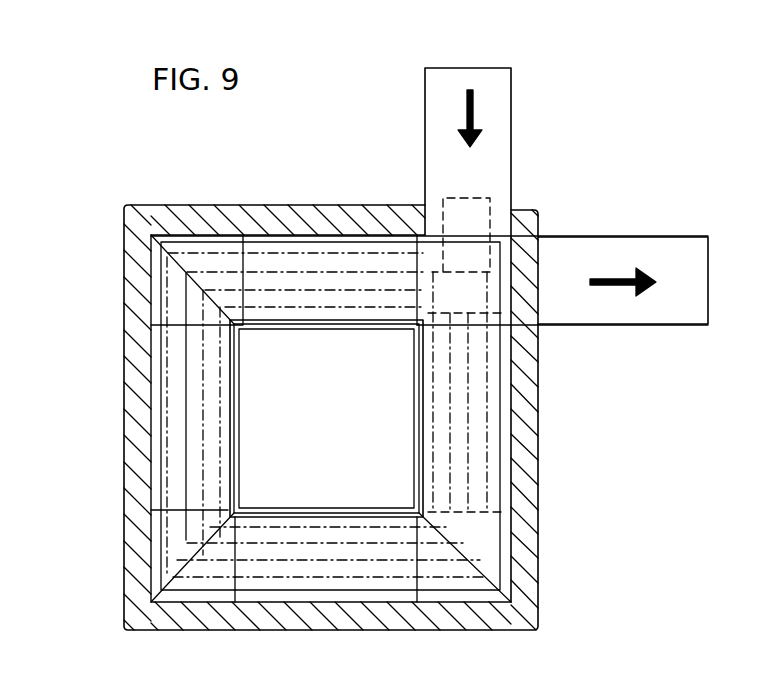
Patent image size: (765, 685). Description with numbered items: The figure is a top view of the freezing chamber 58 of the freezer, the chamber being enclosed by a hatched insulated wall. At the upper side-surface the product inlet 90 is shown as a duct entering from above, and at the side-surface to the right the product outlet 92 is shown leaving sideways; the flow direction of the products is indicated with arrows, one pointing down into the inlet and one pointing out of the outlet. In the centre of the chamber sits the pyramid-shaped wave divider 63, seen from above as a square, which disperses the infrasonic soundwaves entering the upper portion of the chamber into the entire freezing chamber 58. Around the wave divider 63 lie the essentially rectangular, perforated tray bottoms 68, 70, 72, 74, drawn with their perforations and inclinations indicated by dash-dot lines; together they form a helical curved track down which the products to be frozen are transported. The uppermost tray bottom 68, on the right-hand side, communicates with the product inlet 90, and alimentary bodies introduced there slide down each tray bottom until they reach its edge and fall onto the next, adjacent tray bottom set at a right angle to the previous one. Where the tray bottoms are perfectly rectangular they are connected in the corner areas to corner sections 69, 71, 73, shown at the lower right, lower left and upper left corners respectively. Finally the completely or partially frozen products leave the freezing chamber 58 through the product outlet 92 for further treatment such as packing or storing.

The freezing chamber 58 is at (211, 556).
The wave divider 63 is at (340, 441).
The tray bottom 68 is at (477, 472).
The corner section 69 is at (480, 550).
The tray bottom 70 is at (327, 570).
The corner section 71 is at (172, 539).
The tray bottom 72 is at (183, 445).
The corner section 73 is at (172, 279).
The tray bottom 74 is at (285, 265).
The product inlet 90 is at (488, 160).
The product outlet 92 is at (618, 262).